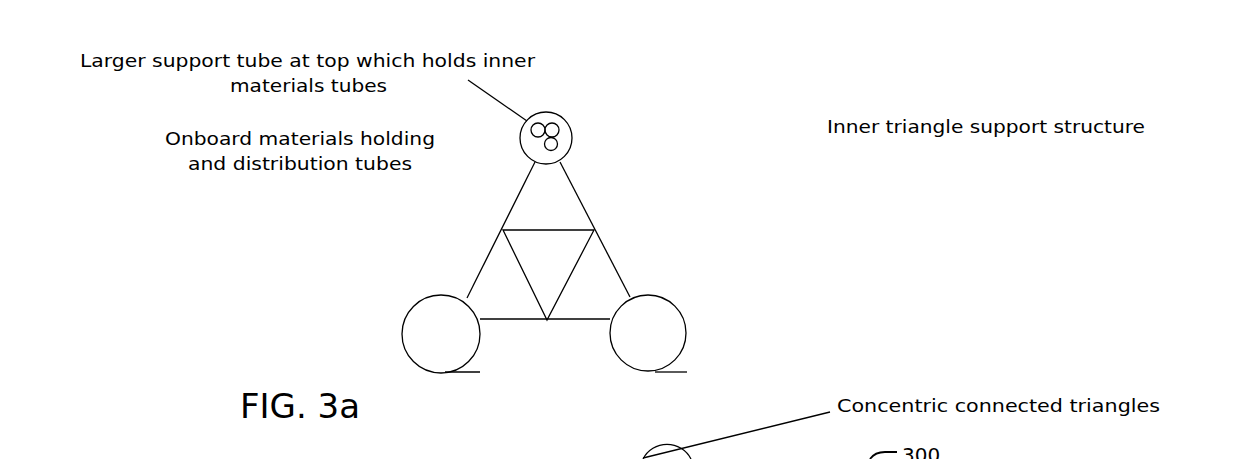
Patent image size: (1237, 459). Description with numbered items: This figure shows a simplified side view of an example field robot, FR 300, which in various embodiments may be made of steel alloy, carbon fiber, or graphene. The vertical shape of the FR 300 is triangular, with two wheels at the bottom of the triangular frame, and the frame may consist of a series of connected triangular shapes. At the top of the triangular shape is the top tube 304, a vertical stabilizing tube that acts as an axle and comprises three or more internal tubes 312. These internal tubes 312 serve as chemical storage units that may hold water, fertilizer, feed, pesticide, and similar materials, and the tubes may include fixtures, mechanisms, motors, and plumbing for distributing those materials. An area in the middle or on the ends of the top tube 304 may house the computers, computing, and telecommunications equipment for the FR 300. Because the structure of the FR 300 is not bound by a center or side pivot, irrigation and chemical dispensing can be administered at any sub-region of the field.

The field robot 300 is at (735, 113).
The top tube 304 is at (558, 118).
The internal tubes 312 is at (521, 144).